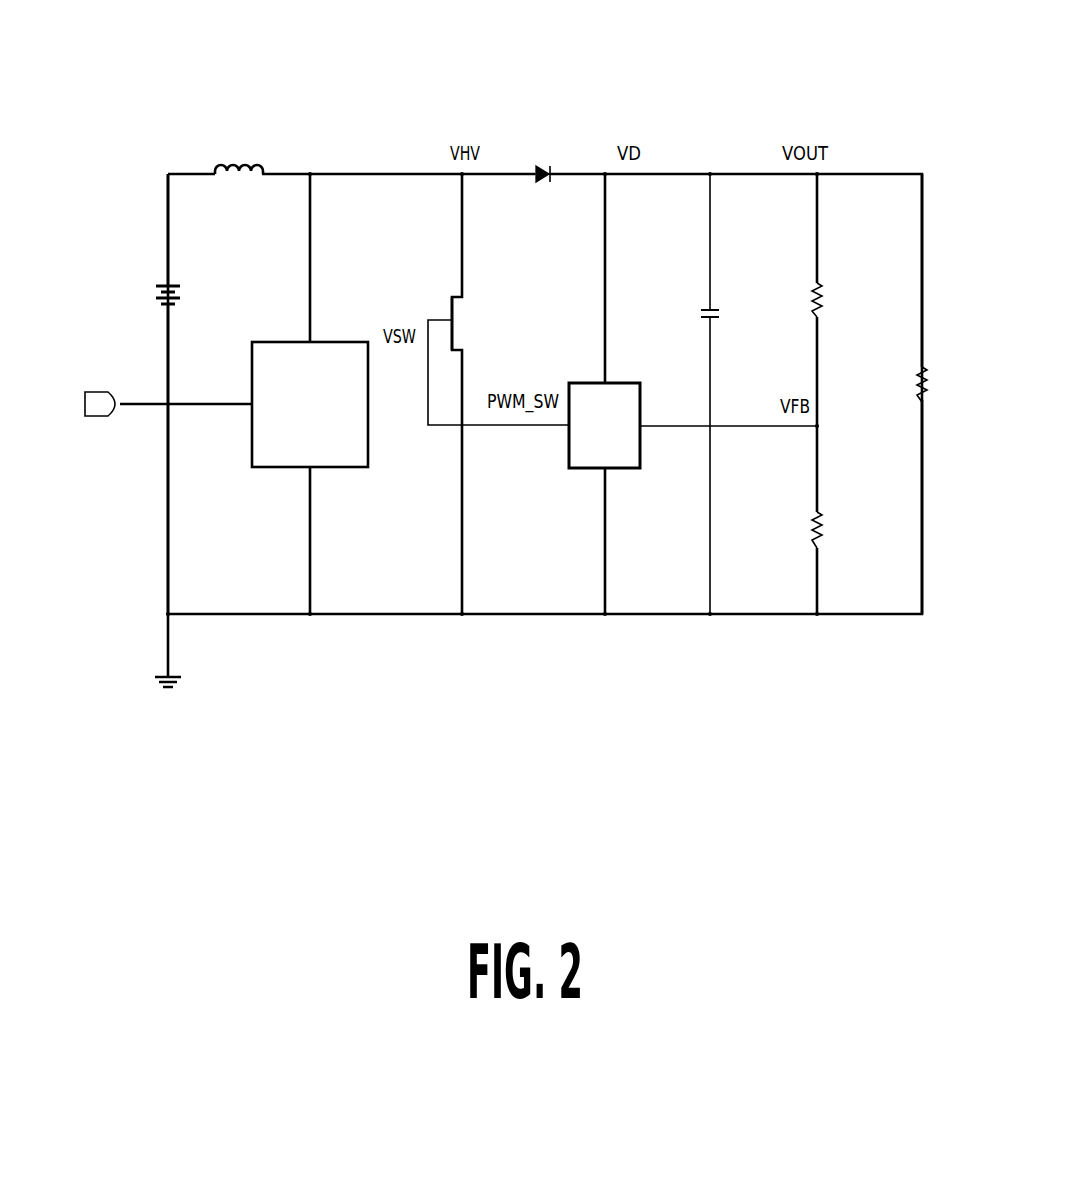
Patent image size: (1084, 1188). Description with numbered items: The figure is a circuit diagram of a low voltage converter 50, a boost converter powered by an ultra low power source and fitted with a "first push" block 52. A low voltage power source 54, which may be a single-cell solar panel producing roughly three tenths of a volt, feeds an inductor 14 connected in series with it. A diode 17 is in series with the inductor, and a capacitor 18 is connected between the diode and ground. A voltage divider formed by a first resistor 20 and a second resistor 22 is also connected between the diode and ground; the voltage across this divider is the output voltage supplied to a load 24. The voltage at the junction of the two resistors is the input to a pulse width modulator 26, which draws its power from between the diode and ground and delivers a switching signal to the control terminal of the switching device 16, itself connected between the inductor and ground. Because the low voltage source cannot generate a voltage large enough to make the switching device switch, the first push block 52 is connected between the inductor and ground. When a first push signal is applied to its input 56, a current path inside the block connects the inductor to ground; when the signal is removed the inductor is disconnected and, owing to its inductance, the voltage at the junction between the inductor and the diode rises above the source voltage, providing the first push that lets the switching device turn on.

The inductor 14 is at (258, 135).
The diode 17 is at (550, 157).
The switching device 16 is at (460, 317).
The capacitor 18 is at (708, 311).
The first resistor 20 is at (820, 287).
The second resistor 22 is at (820, 535).
The load 24 is at (923, 373).
The pulse width modulator 26 is at (625, 465).
The first push block 52 is at (340, 463).
The low voltage power source 54 is at (150, 258).
The input 56 is at (102, 407).
The low voltage converter 50 is at (218, 822).